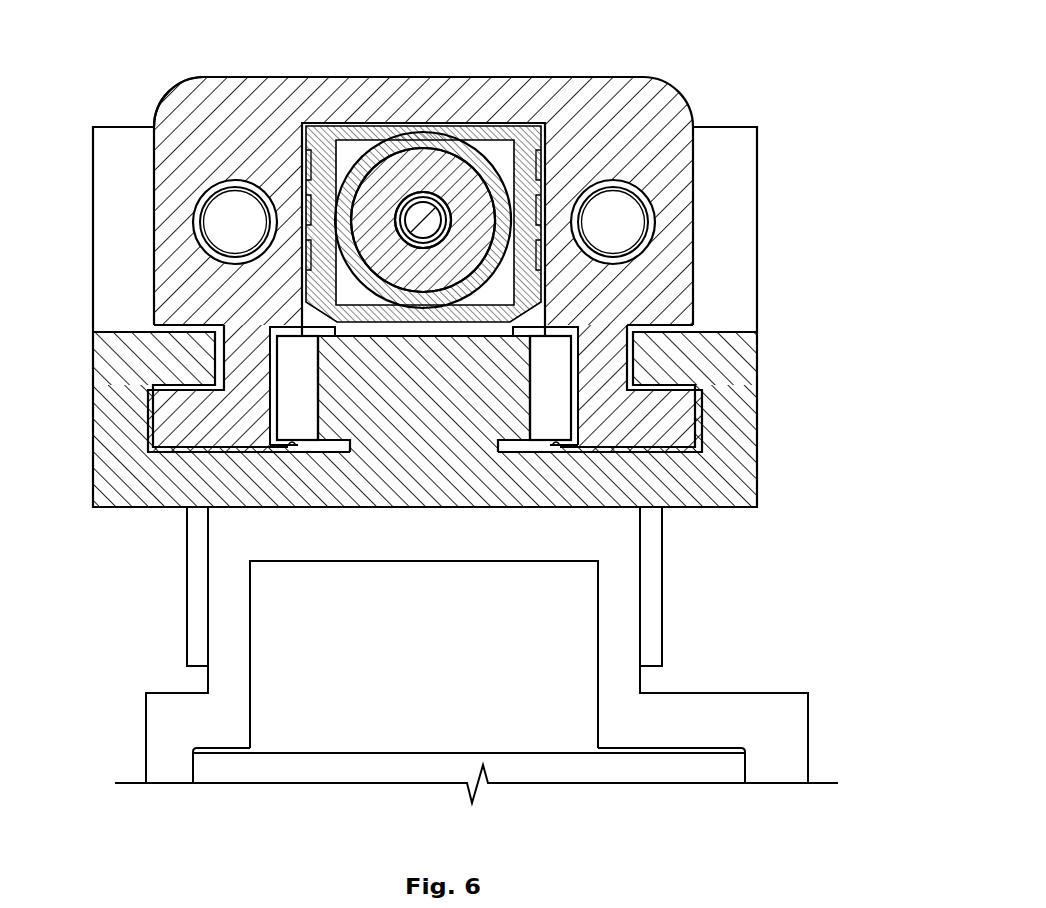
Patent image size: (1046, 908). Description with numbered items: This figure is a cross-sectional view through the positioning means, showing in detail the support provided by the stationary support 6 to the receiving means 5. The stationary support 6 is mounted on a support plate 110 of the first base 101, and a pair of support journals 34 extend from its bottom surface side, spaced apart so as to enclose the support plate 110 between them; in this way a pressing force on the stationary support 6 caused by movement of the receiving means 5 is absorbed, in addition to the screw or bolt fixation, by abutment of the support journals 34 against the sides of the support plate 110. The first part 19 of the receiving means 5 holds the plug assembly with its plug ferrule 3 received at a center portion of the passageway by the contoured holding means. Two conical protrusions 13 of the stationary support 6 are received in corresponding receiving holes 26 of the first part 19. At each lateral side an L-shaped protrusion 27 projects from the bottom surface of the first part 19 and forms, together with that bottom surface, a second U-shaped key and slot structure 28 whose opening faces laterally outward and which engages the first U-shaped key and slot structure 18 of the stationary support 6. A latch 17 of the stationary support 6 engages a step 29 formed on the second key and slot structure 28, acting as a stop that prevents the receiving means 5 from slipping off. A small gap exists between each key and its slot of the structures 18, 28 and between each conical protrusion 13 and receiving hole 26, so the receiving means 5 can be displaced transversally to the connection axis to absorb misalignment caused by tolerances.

The plug ferrule 3 is at (471, 127).
The receiving means 5 is at (702, 90).
The stationary support 6 is at (88, 363).
The conical protrusion 13 is at (222, 228).
The latch 17 is at (290, 445).
The first key and slot structure 18 is at (662, 418).
The first part 19 is at (202, 95).
The receiving hole 26 is at (227, 178).
The L-shaped protrusion 27 is at (170, 406).
The second U-shaped key and slot structure 28 is at (167, 355).
The step 29 is at (290, 418).
The support journal 34 is at (202, 610).
The first base 101 is at (824, 707).
The support plate 110 is at (393, 543).